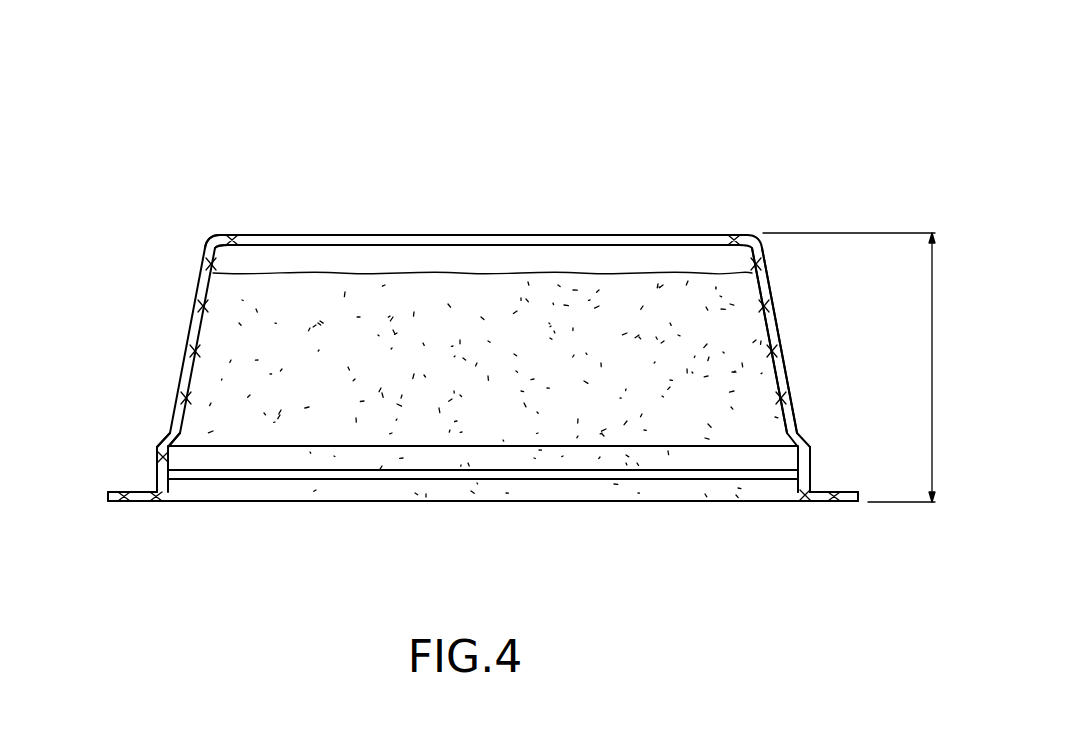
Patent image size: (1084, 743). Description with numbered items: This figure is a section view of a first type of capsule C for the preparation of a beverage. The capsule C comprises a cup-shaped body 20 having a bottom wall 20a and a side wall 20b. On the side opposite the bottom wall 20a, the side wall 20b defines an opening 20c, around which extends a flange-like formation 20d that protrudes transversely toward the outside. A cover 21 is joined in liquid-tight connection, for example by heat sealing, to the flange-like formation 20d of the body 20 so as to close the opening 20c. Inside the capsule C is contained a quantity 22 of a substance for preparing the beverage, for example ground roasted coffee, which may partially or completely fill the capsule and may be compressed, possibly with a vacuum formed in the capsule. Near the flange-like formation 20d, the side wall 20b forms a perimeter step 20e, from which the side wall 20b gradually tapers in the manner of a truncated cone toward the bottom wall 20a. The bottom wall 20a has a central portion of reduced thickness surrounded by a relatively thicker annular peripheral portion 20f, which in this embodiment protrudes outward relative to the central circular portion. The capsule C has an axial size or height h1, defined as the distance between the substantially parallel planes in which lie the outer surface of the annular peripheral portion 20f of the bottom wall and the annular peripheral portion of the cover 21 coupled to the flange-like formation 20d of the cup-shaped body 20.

The capsule C is at (277, 192).
The cup-shaped body 20 is at (182, 331).
The bottom wall 20a is at (612, 228).
The side wall 20b is at (785, 347).
The opening 20c is at (796, 490).
The flange-like formation 20d is at (130, 500).
The perimeter step 20e is at (170, 432).
The annular peripheral portion 20f is at (250, 234).
The cover 21 is at (410, 502).
The quantity of substance 22 is at (452, 320).
The height h1 is at (932, 415).